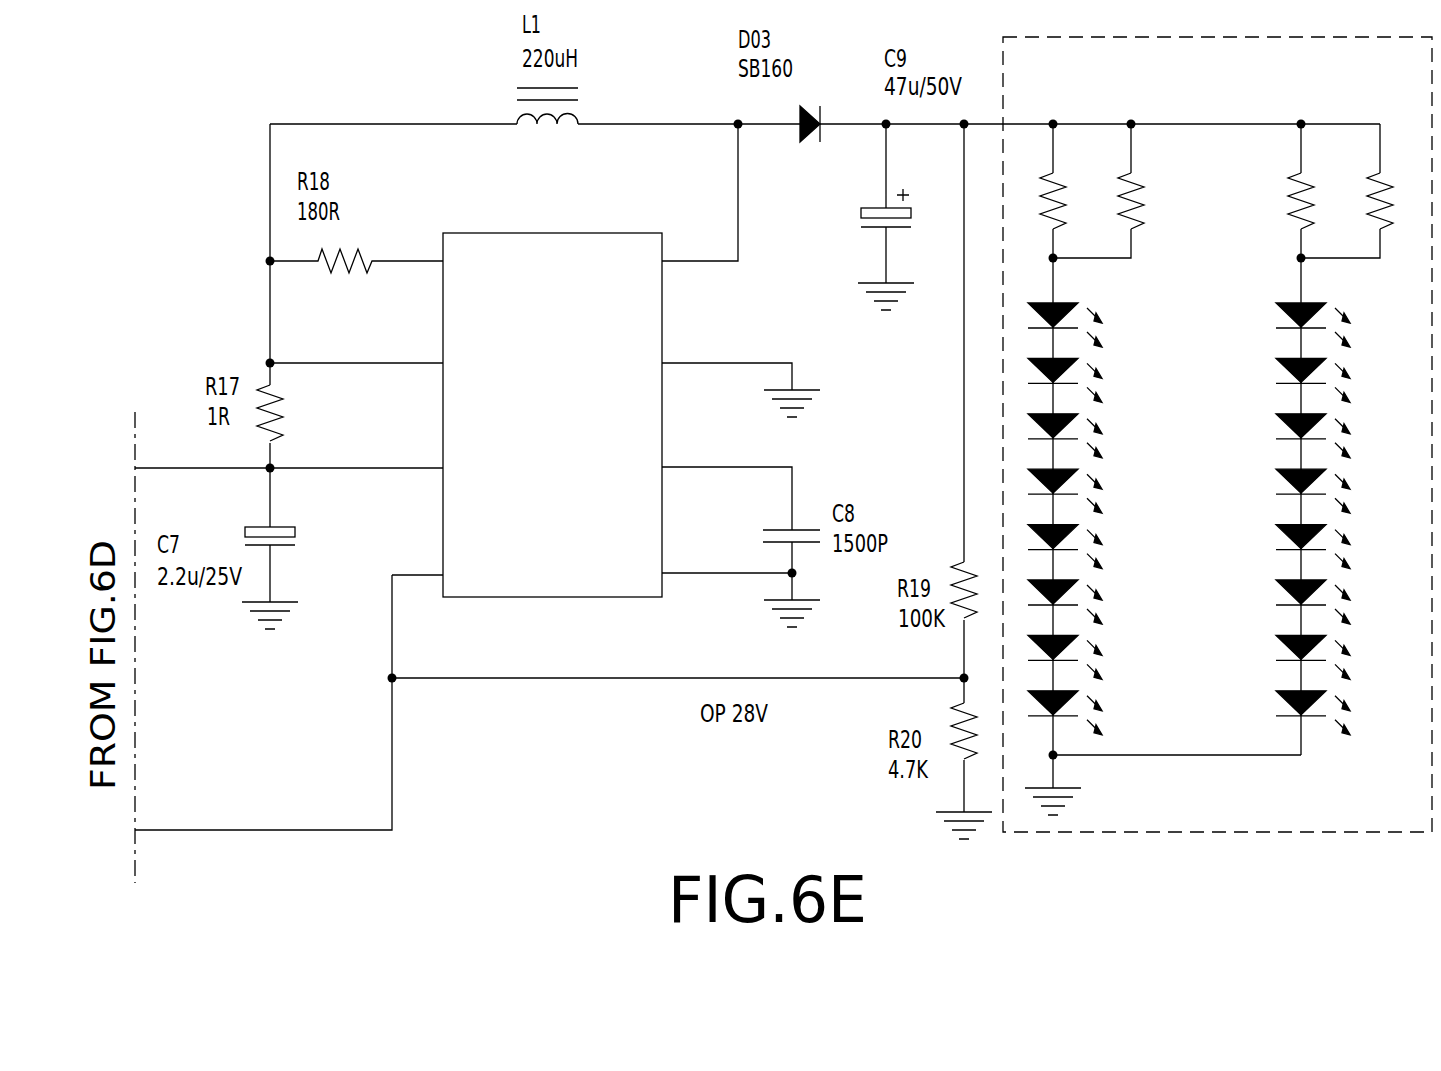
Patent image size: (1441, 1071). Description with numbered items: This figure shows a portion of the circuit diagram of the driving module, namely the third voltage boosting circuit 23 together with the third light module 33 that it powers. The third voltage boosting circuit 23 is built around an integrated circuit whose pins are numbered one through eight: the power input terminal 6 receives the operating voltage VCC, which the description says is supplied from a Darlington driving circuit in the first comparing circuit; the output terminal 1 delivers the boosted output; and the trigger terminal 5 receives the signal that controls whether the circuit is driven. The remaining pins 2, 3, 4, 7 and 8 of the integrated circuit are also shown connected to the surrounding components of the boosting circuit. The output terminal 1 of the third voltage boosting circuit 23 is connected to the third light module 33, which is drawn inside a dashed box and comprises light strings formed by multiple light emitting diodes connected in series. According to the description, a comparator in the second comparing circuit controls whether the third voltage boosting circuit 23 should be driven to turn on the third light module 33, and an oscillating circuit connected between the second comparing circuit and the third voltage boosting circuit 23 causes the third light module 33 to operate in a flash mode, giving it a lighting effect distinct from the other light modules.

The third voltage boosting circuit 23 is at (455, 526).
The third light module 33 is at (1248, 815).
The output terminal 1 is at (700, 192).
The switch emitter pin 2 is at (741, 374).
The timing capacitor pin 3 is at (727, 483).
The ground pin 4 is at (727, 559).
The trigger terminal 5 is at (289, 688).
The power input terminal 6 is at (289, 452).
The current sense pin 7 is at (356, 347).
The driver collector pin 8 is at (356, 251).